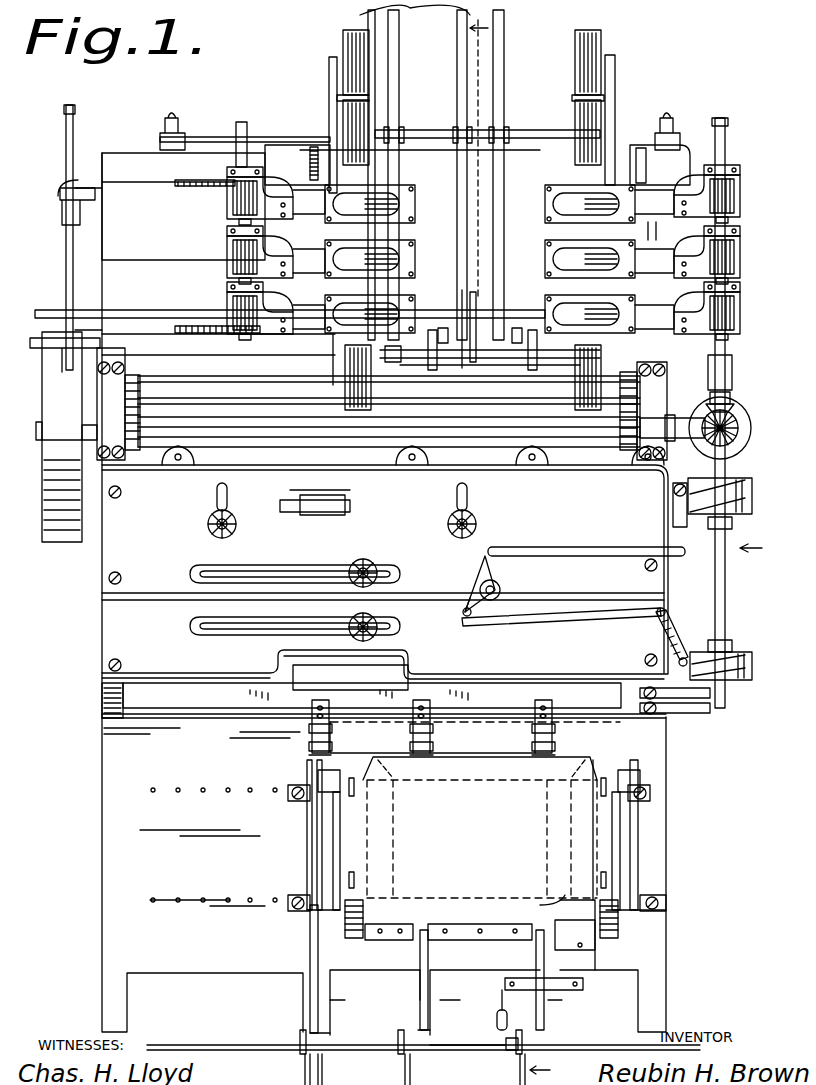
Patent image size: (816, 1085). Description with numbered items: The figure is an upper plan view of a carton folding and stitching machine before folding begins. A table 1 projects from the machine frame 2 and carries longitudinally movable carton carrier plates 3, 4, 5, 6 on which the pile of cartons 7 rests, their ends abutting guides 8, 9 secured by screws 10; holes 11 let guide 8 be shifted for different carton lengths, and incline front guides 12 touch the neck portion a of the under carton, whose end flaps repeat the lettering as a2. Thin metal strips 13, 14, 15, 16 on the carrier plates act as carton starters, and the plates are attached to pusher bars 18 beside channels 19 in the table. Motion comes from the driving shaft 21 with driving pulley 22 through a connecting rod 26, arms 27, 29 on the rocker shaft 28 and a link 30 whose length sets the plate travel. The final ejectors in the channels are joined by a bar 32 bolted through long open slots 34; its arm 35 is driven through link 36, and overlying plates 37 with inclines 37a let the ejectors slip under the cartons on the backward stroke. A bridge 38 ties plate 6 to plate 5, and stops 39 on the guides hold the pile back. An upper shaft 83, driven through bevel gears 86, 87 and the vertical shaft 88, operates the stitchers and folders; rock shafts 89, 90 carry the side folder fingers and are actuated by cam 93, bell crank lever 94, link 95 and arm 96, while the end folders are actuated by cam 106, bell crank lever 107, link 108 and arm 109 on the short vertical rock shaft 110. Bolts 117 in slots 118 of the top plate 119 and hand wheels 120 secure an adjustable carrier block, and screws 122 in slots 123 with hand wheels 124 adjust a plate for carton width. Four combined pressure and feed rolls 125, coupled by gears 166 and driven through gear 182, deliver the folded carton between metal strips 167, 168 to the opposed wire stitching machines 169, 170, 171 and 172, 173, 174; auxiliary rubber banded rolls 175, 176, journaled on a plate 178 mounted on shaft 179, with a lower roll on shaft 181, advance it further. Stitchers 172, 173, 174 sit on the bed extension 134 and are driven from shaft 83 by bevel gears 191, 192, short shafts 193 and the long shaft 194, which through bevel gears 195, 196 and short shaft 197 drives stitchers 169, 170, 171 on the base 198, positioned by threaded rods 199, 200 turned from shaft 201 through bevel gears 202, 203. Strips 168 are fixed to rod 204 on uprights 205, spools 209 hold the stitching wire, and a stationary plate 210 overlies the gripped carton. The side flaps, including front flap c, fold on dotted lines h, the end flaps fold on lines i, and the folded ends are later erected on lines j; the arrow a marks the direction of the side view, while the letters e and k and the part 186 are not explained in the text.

The table 1 is at (102, 896).
The machine frame 2 is at (102, 603).
The carton carrier plate 3 is at (479, 154).
The carton carrier plate 4 is at (382, 980).
The carton carrier plate 5 is at (485, 985).
The carton carrier plate 6 is at (590, 948).
The cartons 7 is at (482, 829).
The guide 8 is at (307, 825).
The guide 9 is at (638, 850).
The screws 10 is at (292, 798).
The holes 11 is at (205, 794).
The incline front guides 12 is at (352, 938).
The thin metal strip 13 is at (547, 1075).
The thin metal strip 14 is at (392, 940).
The thin metal strip 15 is at (490, 932).
The thin metal strip 16 is at (575, 939).
The pusher bars 18 is at (329, 1069).
The grooves or channels 19 is at (330, 1040).
The driving shaft 21 is at (36, 428).
The driving pulley 22 is at (62, 437).
The connecting rod 26 is at (496, 1012).
The arm 27 is at (506, 1050).
The rocker shaft 28 is at (258, 1052).
The arm 29 is at (300, 1040).
The link 30 is at (302, 1070).
The bar 32 is at (432, 737).
The long open slots 34 is at (428, 942).
The arm 35 is at (480, 768).
The link 36 is at (440, 712).
The plates 37 is at (312, 725).
The incline 37a is at (310, 750).
The bridge 38 is at (525, 978).
The stops 39 is at (318, 780).
The upper shaft 83 is at (725, 150).
The bevel gear 86 is at (725, 400).
The bevel gear 87 is at (734, 420).
The vertical shaft 88 is at (700, 420).
The rock shaft 89 is at (322, 505).
The rock shaft 90 is at (385, 668).
The cam 93 is at (752, 662).
The bell crank lever 94 is at (684, 640).
The link 95 is at (575, 620).
The arm 96 is at (462, 606).
The cam 106 is at (752, 492).
The bell crank lever 107 is at (673, 510).
The link 108 is at (586, 545).
The arm 109 is at (483, 560).
The short vertical rock shaft 110 is at (478, 588).
The bolts 117 is at (375, 566).
The slots 118 is at (262, 630).
The top plate 119 is at (264, 574).
The hand wheels 120 is at (364, 559).
The screws 122 is at (208, 522).
The slots 123 is at (217, 496).
The hand wheels 124 is at (212, 534).
The rolls 125 is at (215, 430).
The bed extension 134 is at (668, 145).
The gears 166 is at (125, 408).
The metal strip 167 is at (438, 132).
The metal strips 168 is at (572, 20).
The wire stitching machine 169 is at (370, 204).
The wire stitching machine 170 is at (370, 259).
The wire stitching machine 171 is at (370, 314).
The wire stitching machine 172 is at (590, 204).
The wire stitching machine 173 is at (590, 259).
The wire stitching machine 174 is at (590, 314).
The auxiliary rubber banded roll 175 is at (432, 370).
The auxiliary rubber banded roll 176 is at (443, 328).
The plate 178 is at (470, 360).
The shaft 179 is at (490, 380).
The shaft 181 is at (478, 326).
The gear 182 is at (751, 428).
The rod 186 is at (467, 321).
The bevel gear 191 is at (720, 208).
The bevel gear 192 is at (725, 188).
The short shafts 193 is at (645, 262).
The long shaft 194 is at (290, 305).
The bevel gear 195 is at (236, 210).
The bevel gear 196 is at (233, 192).
The short shaft 197 is at (243, 122).
The base 198 is at (290, 145).
The threaded rod 199 is at (183, 206).
The threaded rod 200 is at (201, 340).
The shaft 201 is at (73, 155).
The bevel gear 202 is at (95, 185).
The bevel gear 203 is at (60, 191).
The rod 204 is at (200, 137).
The uprights 205 is at (172, 118).
The spools 209 is at (330, 100).
The stationary plate 210 is at (362, 490).
The neck portion / end flaps a is at (759, 545).
The letter a a2 is at (478, 836).
The side flap c is at (502, 766).
The letter e is at (478, 821).
The dotted lines h is at (590, 770).
The lines i is at (392, 845).
The lines j is at (430, 828).
The letter k is at (601, 830).